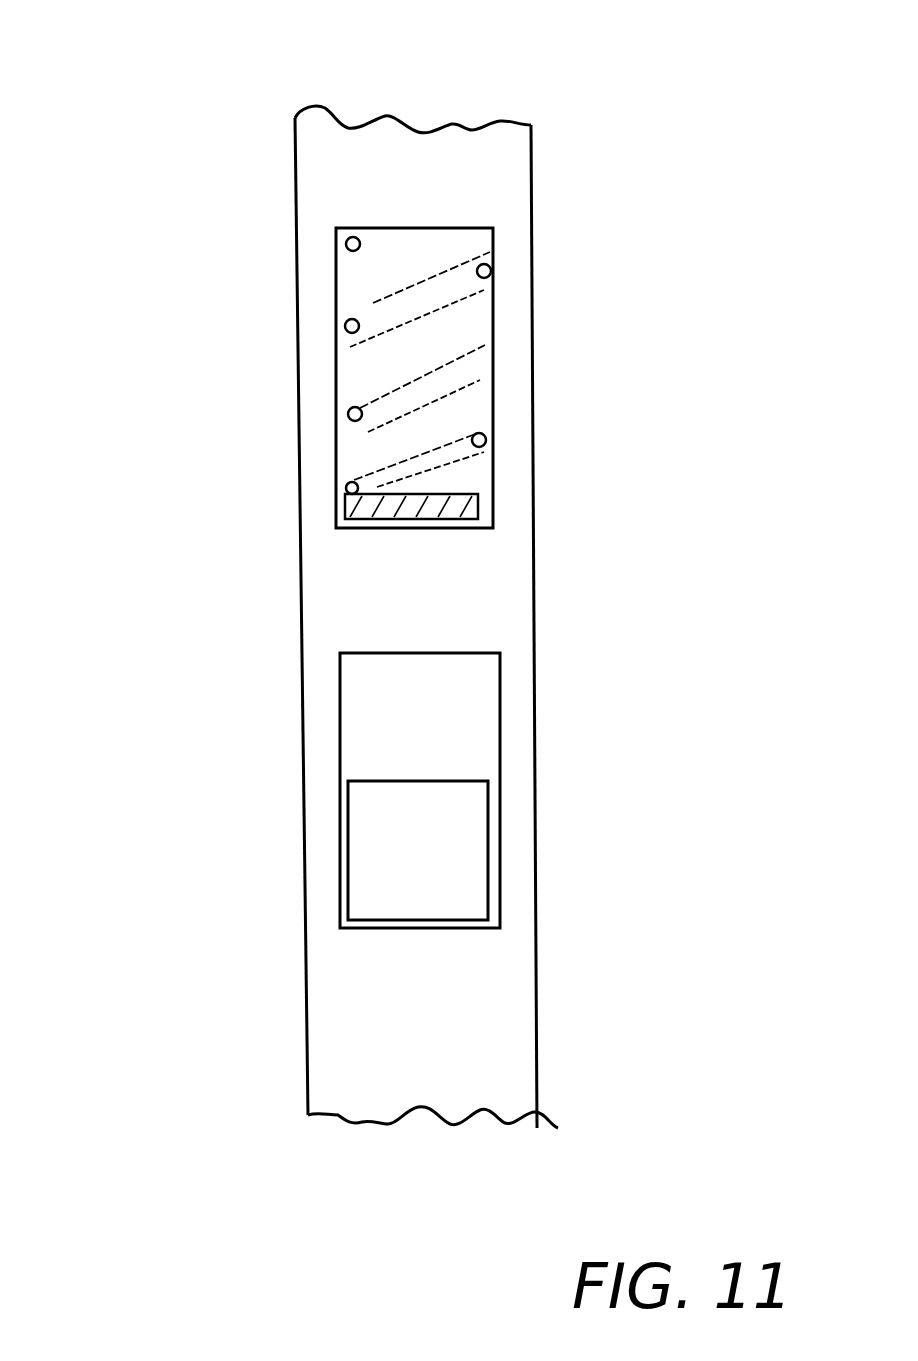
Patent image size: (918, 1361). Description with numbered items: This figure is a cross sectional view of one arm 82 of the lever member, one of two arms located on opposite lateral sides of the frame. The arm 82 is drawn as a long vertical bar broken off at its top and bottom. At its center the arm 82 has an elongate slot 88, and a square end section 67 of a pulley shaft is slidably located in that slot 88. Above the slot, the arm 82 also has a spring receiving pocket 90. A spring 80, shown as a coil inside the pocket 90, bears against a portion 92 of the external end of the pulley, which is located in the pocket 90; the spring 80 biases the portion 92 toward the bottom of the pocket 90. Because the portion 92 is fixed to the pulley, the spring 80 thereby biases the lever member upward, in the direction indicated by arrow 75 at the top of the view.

The arrow 75 is at (413, 70).
The spring 80 is at (375, 298).
The arm 82 is at (298, 585).
The elongate slot 88 is at (452, 705).
The spring receiving pocket 90 is at (415, 350).
The portion of the external end of the pulley 92 is at (478, 505).
The square end section of the pulley shaft 67 is at (457, 872).